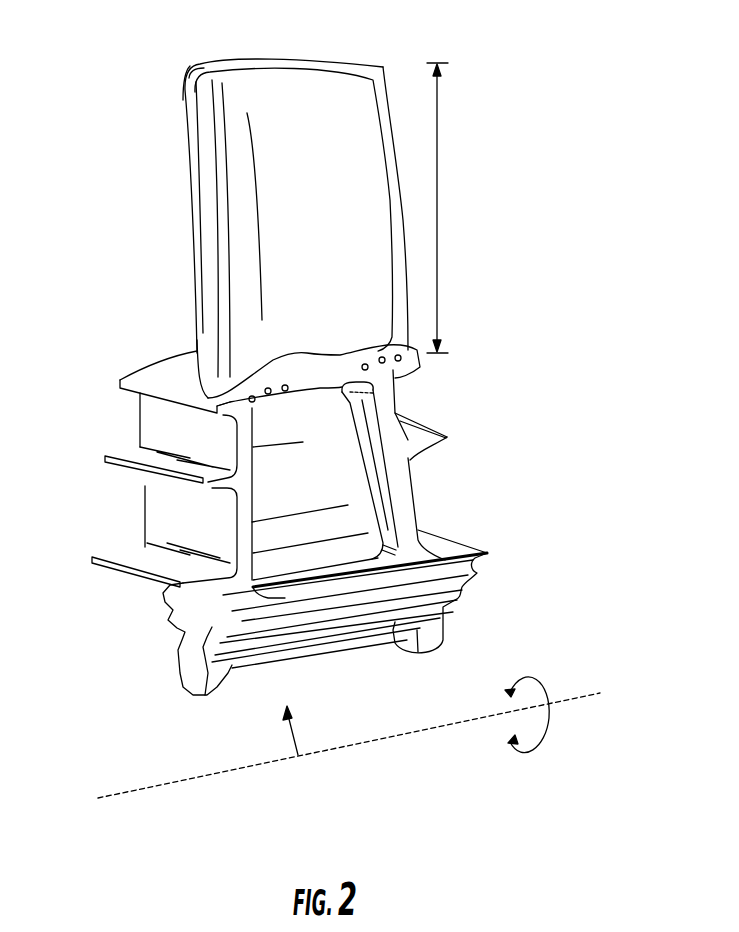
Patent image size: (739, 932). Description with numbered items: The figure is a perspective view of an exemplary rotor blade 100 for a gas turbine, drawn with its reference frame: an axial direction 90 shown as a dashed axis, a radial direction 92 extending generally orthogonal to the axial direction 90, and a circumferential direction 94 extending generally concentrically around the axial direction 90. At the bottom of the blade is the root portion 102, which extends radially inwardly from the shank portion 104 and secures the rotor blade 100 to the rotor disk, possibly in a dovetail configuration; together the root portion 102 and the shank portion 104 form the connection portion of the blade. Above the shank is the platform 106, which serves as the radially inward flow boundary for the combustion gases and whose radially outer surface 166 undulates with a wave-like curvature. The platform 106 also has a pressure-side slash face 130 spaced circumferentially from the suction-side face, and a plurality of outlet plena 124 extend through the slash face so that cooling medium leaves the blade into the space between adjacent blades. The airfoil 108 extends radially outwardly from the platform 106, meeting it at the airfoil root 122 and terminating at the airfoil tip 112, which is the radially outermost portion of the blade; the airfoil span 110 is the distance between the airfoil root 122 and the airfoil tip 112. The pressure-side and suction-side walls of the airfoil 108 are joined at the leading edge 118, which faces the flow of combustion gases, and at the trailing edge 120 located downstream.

The rotor blade 100 is at (320, 352).
The root portion 102 is at (193, 627).
The shank portion 104 is at (168, 510).
The platform 106 is at (120, 382).
The airfoil 108 is at (273, 183).
The airfoil span 110 is at (437, 202).
The airfoil tip 112 is at (214, 70).
The leading edge 118 is at (185, 88).
The trailing edge 120 is at (393, 135).
The airfoil root 122 is at (280, 362).
The outlet plena 124 is at (266, 410).
The pressure-side slash face 130 is at (320, 388).
The radially outer surface 166 is at (173, 388).
The axial direction 90 is at (192, 778).
The radial direction 92 is at (300, 754).
The circumferential direction 94 is at (547, 703).